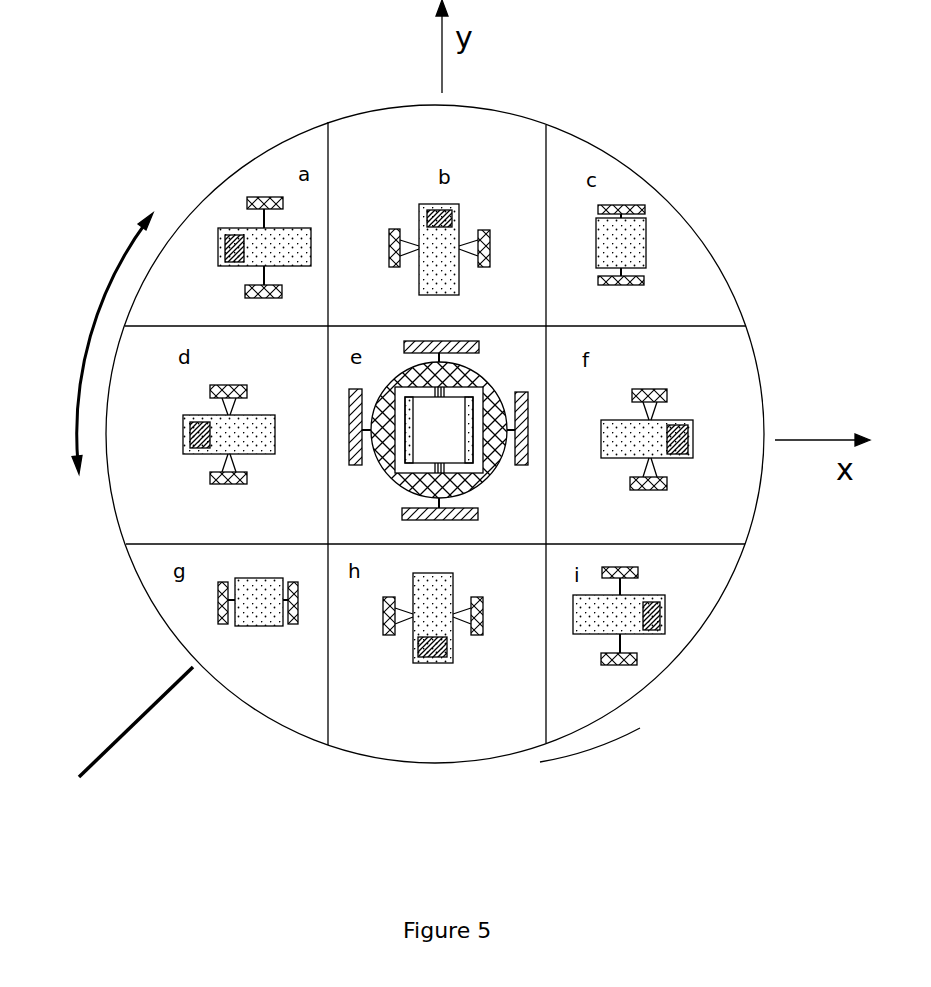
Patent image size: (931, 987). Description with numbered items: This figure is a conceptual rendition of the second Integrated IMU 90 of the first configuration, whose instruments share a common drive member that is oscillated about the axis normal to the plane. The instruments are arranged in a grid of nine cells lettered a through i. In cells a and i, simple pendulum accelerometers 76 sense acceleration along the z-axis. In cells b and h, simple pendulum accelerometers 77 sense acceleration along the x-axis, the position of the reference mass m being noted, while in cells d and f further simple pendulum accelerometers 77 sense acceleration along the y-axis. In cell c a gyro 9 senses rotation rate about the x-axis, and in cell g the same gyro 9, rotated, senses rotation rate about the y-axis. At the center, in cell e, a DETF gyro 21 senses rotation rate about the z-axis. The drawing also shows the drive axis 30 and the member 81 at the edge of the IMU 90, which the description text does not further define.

The second IMU 90 is at (673, 83).
The substrate edge 81 is at (587, 728).
The simple pendulum accelerometers 77 is at (470, 160).
The simple pendulum accelerometers 76 is at (222, 227).
The gyro 9 is at (633, 218).
The DETF gyro 21 is at (505, 497).
The drive axis 30 is at (120, 759).